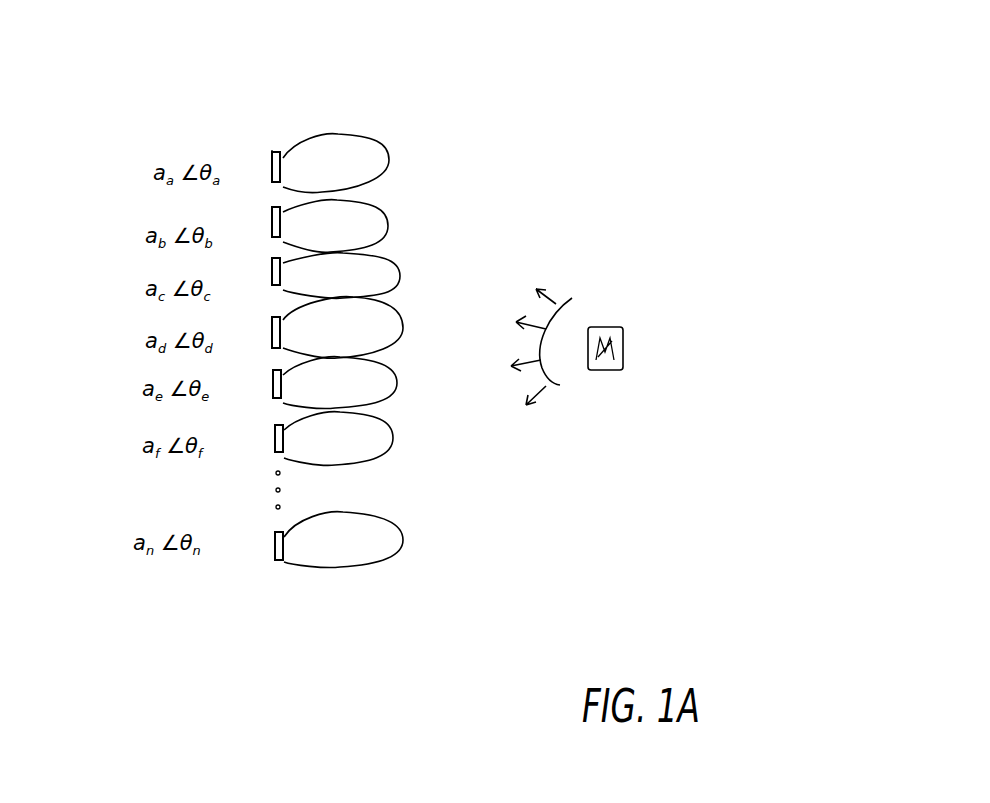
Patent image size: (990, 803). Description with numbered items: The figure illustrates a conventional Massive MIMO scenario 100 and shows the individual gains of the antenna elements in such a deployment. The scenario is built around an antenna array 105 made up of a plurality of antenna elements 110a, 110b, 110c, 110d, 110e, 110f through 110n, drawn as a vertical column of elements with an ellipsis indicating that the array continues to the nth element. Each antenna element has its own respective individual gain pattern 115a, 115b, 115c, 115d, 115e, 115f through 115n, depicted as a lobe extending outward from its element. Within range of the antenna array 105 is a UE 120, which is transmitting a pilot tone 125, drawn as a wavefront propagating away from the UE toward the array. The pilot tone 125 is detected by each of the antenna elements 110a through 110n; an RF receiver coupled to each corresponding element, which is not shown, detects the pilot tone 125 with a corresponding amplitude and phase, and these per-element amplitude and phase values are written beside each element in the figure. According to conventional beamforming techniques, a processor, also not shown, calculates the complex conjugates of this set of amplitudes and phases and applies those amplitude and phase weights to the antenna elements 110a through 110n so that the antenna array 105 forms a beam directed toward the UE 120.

The conventional Massive MIMO scenario 100 is at (888, 182).
The antenna array 105 is at (275, 123).
The antenna element 110a is at (270, 165).
The antenna element 110b is at (272, 227).
The antenna element 110c is at (272, 277).
The antenna element 110d is at (272, 332).
The antenna element 110e is at (273, 383).
The antenna element 110f is at (275, 437).
The antenna element 110n is at (273, 542).
The individual gain pattern 115a is at (380, 145).
The individual gain pattern 115b is at (387, 207).
The individual gain pattern 115c is at (397, 263).
The individual gain pattern 115d is at (398, 317).
The individual gain pattern 115e is at (393, 375).
The individual gain pattern 115f is at (388, 428).
The individual gain pattern 115n is at (398, 530).
The UE 120 is at (633, 348).
The pilot tone 125 is at (577, 287).